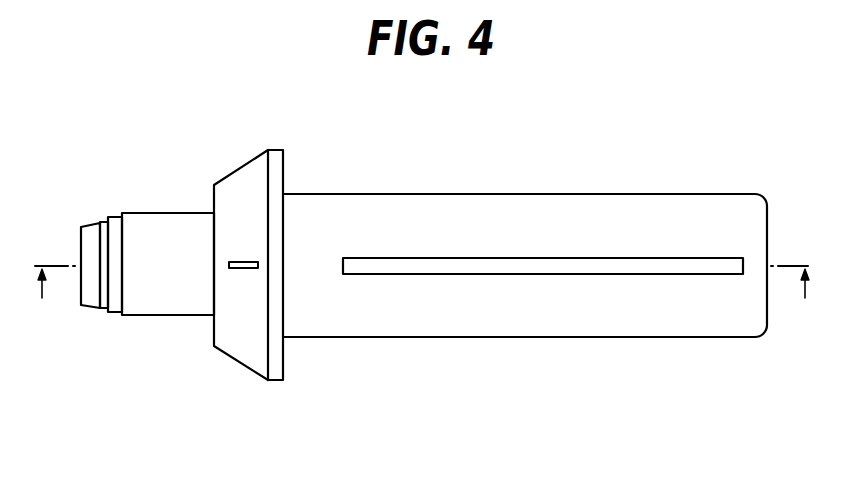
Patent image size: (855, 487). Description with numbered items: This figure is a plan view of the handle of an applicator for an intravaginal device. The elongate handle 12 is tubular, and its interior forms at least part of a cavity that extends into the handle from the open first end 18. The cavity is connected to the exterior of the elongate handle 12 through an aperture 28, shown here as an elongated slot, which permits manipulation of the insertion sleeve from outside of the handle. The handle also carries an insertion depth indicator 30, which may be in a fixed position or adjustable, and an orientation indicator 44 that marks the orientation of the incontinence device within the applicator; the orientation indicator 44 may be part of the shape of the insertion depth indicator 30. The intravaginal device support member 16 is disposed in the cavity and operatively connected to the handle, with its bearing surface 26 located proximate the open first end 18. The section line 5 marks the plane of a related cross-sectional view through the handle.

The elongate handle 12 is at (595, 222).
The aperture 28 is at (392, 265).
The insertion depth indicator 30 is at (275, 361).
The open first end 18 is at (208, 331).
The orientation indicator 44 is at (243, 263).
The intravaginal device support member 16 is at (172, 245).
The bearing surface 26 is at (80, 247).
The section line 5- 5 is at (424, 297).